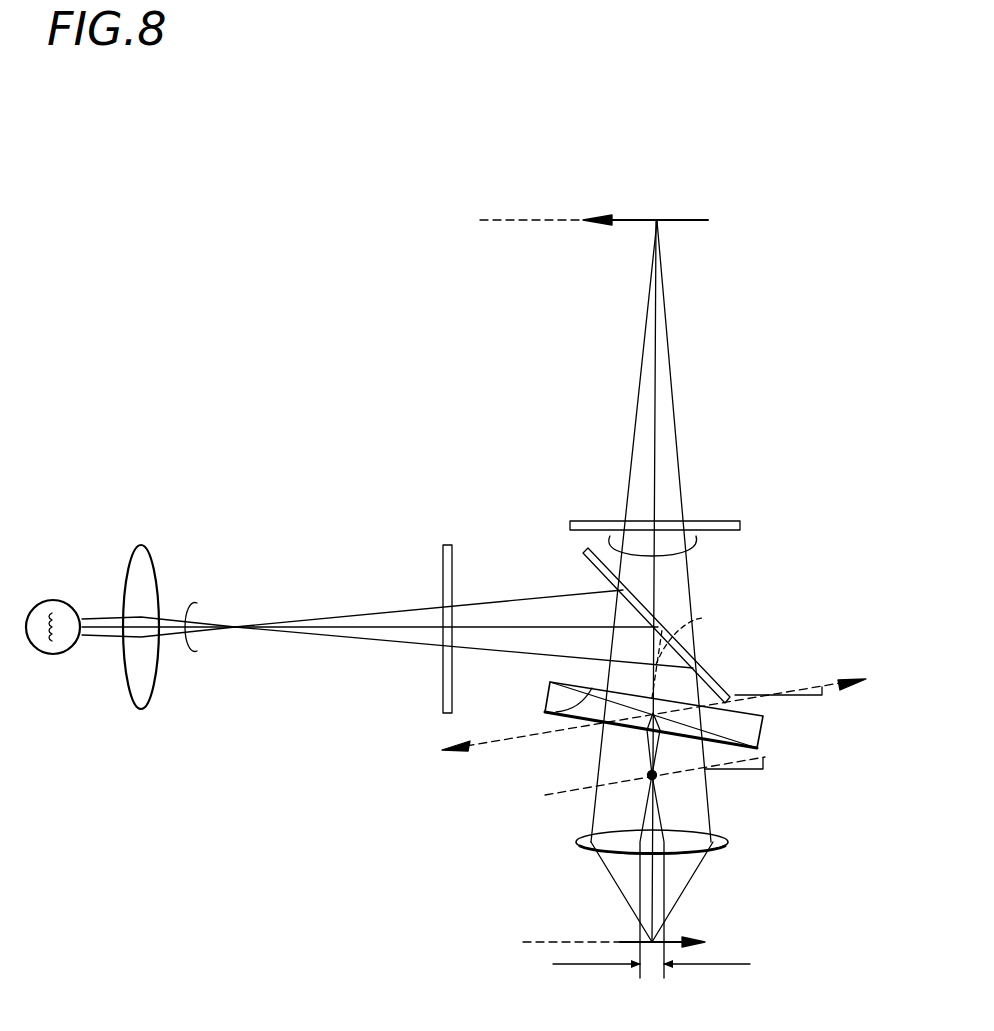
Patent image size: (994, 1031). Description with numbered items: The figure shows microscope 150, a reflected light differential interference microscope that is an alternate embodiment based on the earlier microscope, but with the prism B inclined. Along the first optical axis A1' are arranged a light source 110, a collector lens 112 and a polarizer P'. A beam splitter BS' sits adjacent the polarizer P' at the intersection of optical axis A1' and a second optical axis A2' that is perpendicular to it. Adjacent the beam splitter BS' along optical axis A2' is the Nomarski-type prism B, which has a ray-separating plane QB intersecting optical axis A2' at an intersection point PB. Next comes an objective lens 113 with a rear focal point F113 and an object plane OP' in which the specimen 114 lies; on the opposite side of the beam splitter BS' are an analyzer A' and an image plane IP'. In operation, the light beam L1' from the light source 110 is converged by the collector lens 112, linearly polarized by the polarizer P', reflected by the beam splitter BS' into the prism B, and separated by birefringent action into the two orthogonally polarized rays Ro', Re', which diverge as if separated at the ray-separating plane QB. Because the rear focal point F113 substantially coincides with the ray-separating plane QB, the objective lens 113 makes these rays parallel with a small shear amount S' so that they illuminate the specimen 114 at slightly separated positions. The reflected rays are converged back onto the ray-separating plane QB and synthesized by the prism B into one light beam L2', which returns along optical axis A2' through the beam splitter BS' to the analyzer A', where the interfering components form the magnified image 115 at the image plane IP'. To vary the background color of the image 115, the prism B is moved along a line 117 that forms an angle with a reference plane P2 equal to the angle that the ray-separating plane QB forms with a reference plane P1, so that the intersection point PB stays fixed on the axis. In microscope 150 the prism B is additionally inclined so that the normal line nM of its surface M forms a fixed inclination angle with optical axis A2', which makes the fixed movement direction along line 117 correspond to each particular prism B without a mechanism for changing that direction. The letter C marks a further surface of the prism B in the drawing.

The microscope 150 is at (312, 345).
The light source 110 is at (28, 605).
The collector lens 112 is at (148, 549).
The objective lens 113 is at (728, 838).
The specimen 114 is at (668, 935).
The magnified image 115 is at (694, 218).
The line 117 is at (800, 682).
The optical axis A1' is at (385, 594).
The second optical axis A2' is at (689, 581).
The analyzer A' is at (698, 537).
The light beam L1' is at (220, 681).
The synthesized light beam L2' is at (735, 572).
The polarizer P' is at (438, 594).
The image plane IP' is at (447, 253).
The object plane OP' is at (489, 980).
The beam splitter BS' is at (700, 625).
The entrance surface M is at (572, 684).
The compensator surface C is at (547, 713).
The Nomarski-type prism B is at (765, 733).
The normal line nM is at (700, 623).
The rear focal point F113 is at (652, 775).
The intersection point PB is at (652, 775).
The ray-separating plane QB is at (560, 797).
The reference plane P1 is at (752, 772).
The reference plane P2 is at (802, 700).
The ordinary ray Ro' is at (605, 892).
The extraordinary ray Re' is at (737, 897).
The shear amount S' is at (651, 990).